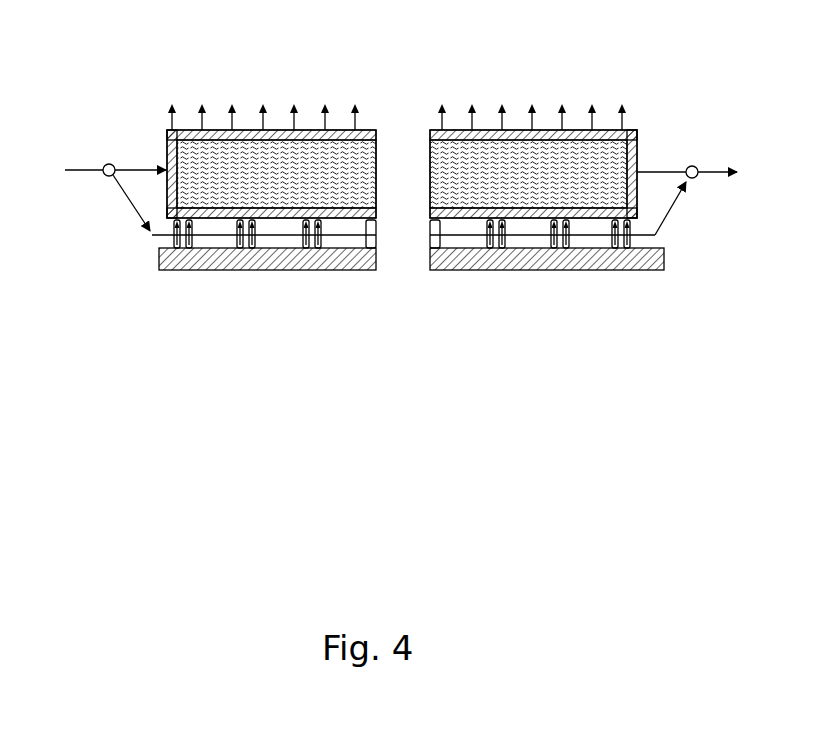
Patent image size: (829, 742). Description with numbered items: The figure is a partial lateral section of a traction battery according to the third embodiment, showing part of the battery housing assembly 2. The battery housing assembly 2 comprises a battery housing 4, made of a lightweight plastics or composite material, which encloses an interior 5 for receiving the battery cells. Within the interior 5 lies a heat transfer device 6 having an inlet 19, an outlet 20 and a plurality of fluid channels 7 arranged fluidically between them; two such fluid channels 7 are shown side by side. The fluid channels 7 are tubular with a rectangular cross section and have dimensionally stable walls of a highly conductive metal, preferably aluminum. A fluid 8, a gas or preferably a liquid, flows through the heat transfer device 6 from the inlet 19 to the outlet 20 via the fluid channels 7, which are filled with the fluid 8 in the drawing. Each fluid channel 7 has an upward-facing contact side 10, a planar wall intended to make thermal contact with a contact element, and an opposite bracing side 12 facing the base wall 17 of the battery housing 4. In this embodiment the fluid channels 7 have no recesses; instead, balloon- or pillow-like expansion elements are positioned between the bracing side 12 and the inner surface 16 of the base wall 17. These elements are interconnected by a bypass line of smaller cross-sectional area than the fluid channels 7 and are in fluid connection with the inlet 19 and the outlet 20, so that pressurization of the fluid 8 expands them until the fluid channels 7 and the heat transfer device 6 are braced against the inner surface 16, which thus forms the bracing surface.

The battery housing assembly 2 is at (84, 237).
The battery housing 4 is at (160, 268).
The interior 5 is at (343, 228).
The heat transfer device 6 is at (102, 140).
The fluid channels 7 is at (185, 130).
The fluid 8 is at (305, 165).
The contact side 10 is at (605, 130).
The bracing side 12 is at (588, 222).
The inner surface 16 is at (436, 232).
The base wall 17 is at (548, 250).
The inlet 19 is at (88, 171).
The outlet 20 is at (712, 172).